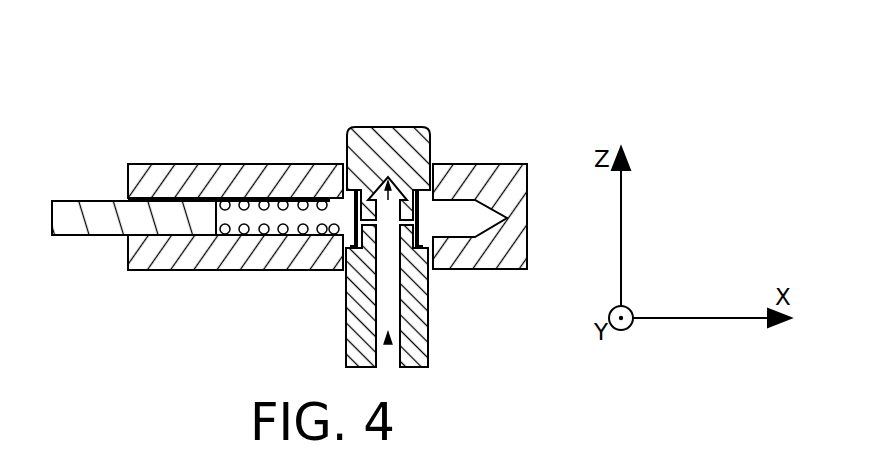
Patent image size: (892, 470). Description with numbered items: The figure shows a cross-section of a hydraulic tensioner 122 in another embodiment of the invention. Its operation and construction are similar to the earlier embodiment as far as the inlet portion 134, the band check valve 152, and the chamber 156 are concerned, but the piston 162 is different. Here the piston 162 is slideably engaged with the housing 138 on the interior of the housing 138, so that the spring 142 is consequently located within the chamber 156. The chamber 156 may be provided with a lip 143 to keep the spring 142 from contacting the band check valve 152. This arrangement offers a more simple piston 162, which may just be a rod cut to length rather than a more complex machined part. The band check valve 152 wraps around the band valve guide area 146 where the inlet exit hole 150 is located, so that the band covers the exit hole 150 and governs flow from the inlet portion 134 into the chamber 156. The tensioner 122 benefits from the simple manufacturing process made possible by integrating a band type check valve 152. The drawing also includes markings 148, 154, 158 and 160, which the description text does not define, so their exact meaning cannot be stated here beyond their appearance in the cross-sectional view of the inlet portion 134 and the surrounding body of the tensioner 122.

The hydraulic tensioner 122 is at (510, 73).
The inlet portion 134 is at (430, 337).
The housing 138 is at (262, 164).
The spring 142 is at (237, 236).
The lip 143 is at (351, 247).
The band valve guide area 146 is at (333, 218).
The inlet flow 148 is at (388, 345).
The inlet exit hole 150 is at (362, 190).
The band check valve 152 is at (341, 200).
The cap 154 is at (387, 72).
The chamber 156 is at (261, 212).
The outlet flow 158 is at (392, 180).
The fitting block 160 is at (491, 220).
The piston 162 is at (84, 218).